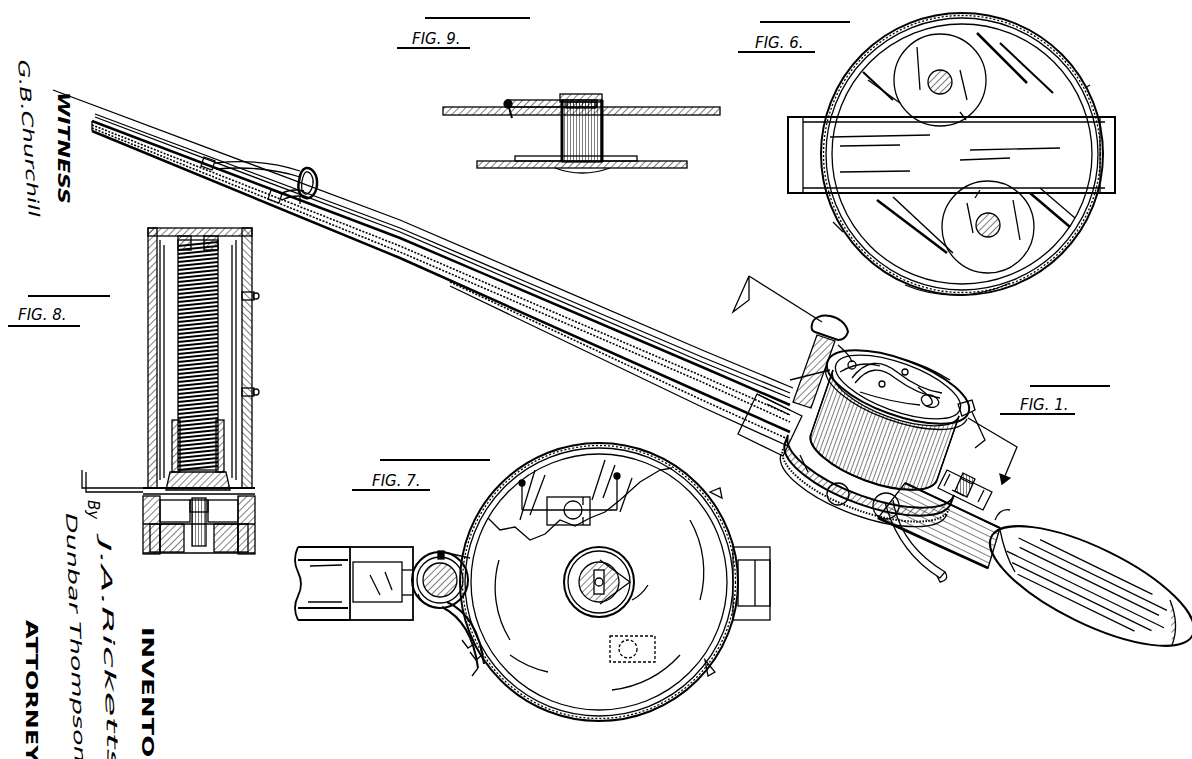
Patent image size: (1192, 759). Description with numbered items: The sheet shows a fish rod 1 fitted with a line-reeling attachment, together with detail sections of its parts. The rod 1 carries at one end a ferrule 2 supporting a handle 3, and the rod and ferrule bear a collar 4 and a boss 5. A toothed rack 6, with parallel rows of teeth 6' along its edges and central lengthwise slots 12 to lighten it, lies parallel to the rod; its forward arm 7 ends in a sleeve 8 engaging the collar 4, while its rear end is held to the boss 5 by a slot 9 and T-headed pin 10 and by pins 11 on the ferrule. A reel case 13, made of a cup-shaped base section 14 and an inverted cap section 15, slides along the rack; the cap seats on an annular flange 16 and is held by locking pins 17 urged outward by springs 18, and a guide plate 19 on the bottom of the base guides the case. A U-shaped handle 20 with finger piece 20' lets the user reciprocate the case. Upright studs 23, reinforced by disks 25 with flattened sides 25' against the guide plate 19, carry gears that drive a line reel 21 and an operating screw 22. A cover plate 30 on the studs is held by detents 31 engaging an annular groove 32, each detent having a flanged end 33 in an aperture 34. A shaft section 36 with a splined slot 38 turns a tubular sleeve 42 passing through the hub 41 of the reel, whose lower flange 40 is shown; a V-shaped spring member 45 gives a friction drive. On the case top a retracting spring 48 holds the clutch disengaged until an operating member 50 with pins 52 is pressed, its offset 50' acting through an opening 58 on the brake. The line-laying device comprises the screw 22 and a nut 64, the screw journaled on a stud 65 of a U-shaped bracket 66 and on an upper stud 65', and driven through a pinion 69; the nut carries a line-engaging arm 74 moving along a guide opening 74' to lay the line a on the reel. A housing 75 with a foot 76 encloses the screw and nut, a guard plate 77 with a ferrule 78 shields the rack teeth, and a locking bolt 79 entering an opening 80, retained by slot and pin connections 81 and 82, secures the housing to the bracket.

In FIG. 1, the fish rod 1 is at (472, 300).
In FIG. 1, the ferrule 2 is at (966, 568).
In FIG. 1, the handle 3 is at (1062, 602).
In FIG. 1, the collar 4 is at (298, 205).
In FIG. 1, the boss 5 is at (1003, 522).
In FIG. 8, the toothed rack 6 is at (199, 550).
In FIG. 8, the teeth 6' is at (198, 549).
In FIG. 1, the arm 7 is at (302, 208).
In FIG. 1, the sleeve 8 is at (272, 204).
In FIG. 1, the slot 9 is at (986, 494).
In FIG. 1, the pin 10 is at (970, 484).
In FIG. 1, the pins 11 is at (952, 478).
In FIG. 8, the lengthwise slots 12 is at (202, 550).
In FIG. 1, the reel case 13 is at (833, 478).
In FIG. 9, the base section 14 is at (479, 161).
In FIG. 6, the base section 14 is at (907, 258).
In FIG. 1, the base section 14 is at (862, 492).
In FIG. 6, the cap section 15 is at (863, 244).
In FIG. 7, the cap section 15 is at (555, 452).
In FIG. 1, the cap section 15 is at (884, 430).
In FIG. 6, the annular flange 16 is at (997, 290).
In FIG. 1, the annular flange 16 is at (900, 500).
In FIG. 6, the locking pins 17 is at (838, 228).
In FIG. 7, the locking pins 17 is at (722, 522).
In FIG. 1, the locking pins 17 is at (806, 462).
In FIG. 6, the springs 18 is at (1045, 60).
In FIG. 6, the guide plate 19 is at (925, 155).
In FIG. 7, the guide plate 19 is at (762, 605).
In FIG. 1, the handle 20 is at (915, 539).
In FIG. 1, the finger piece 20' is at (932, 585).
In FIG. 7, the line reel 21 is at (643, 603).
In FIG. 1, the line reel 21 is at (980, 422).
In FIG. 8, the operating screw 22 is at (210, 332).
In FIG. 7, the operating screw 22 is at (440, 572).
In FIG. 1, the operating screw 22 is at (815, 356).
In FIG. 9, the studs 23 is at (603, 130).
In FIG. 6, the studs 23 is at (940, 72).
In FIG. 7, the studs 23 is at (573, 501).
In FIG. 9, the disks 25 is at (597, 141).
In FIG. 6, the disks 25 is at (977, 153).
In FIG. 9, the flattened sides 25' is at (600, 176).
In FIG. 6, the flattened sides 25' is at (964, 153).
In FIG. 9, the cover plate 30 is at (662, 106).
In FIG. 7, the cover plate 30 is at (594, 455).
In FIG. 9, the detents 31 is at (537, 100).
In FIG. 7, the detents 31 is at (563, 525).
In FIG. 9, the annular groove 32 is at (580, 94).
In FIG. 9, the flanged end 33 is at (510, 110).
In FIG. 9, the aperture 34 is at (507, 102).
In FIG. 7, the aperture 34 is at (524, 500).
In FIG. 7, the shaft section 36 is at (590, 590).
In FIG. 7, the slot 38 is at (596, 596).
In FIG. 1, the lower flange 40 is at (885, 425).
In FIG. 7, the tubular hub 41 is at (622, 563).
In FIG. 7, the tubular sleeve 42 is at (578, 580).
In FIG. 7, the V-shaped member 45 is at (625, 574).
In FIG. 1, the retracting spring 48 is at (940, 400).
In FIG. 1, the operating member 50 is at (895, 369).
In FIG. 1, the downward offset 50' is at (949, 380).
In FIG. 1, the bearing pins 52 is at (908, 372).
In FIG. 1, the opening 58 is at (968, 410).
In FIG. 8, the nut 64 is at (222, 452).
In FIG. 7, the nut 64 is at (432, 604).
In FIG. 8, the end-thrust bearing stud 65 is at (235, 510).
In FIG. 8, the stud bearing 65' is at (207, 225).
In FIG. 8, the U-shaped bracket 66 is at (160, 502).
In FIG. 8, the pinion 69 is at (143, 510).
In FIG. 8, the line-engaging arm 74 is at (112, 476).
In FIG. 7, the line-engaging arm 74 is at (457, 635).
In FIG. 1, the line-engaging arm 74 is at (769, 430).
In FIG. 7, the guide opening 74' is at (497, 653).
In FIG. 1, the guide opening 74' is at (798, 369).
In FIG. 8, the housing 75 is at (148, 355).
In FIG. 7, the housing 75 is at (425, 566).
In FIG. 1, the housing 75 is at (812, 330).
In FIG. 8, the foot 76 is at (254, 528).
In FIG. 7, the foot 76 is at (380, 602).
In FIG. 1, the foot 76 is at (755, 420).
In FIG. 6, the guard plate 77 is at (1083, 92).
In FIG. 7, the guard plate 77 is at (318, 556).
In FIG. 1, the guard plate 77 is at (543, 300).
In FIG. 1, the ferrule 78 is at (204, 170).
In FIG. 8, the locking bolt 79 is at (252, 485).
In FIG. 7, the locking bolt 79 is at (450, 554).
In FIG. 8, the opening 80 is at (254, 493).
In FIG. 8, the slot and pin connection 81 is at (252, 392).
In FIG. 8, the slot and pin connection 82 is at (254, 396).
In FIG. 1, the line a is at (423, 239).